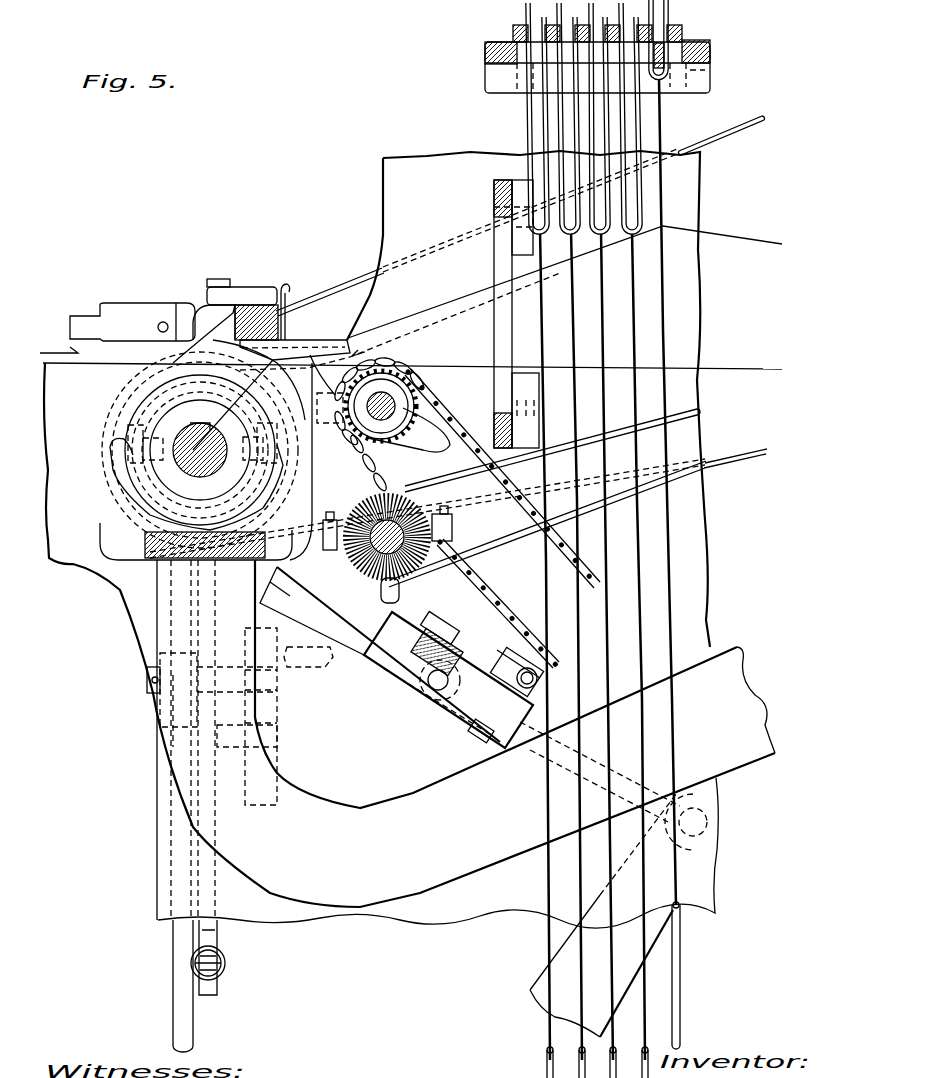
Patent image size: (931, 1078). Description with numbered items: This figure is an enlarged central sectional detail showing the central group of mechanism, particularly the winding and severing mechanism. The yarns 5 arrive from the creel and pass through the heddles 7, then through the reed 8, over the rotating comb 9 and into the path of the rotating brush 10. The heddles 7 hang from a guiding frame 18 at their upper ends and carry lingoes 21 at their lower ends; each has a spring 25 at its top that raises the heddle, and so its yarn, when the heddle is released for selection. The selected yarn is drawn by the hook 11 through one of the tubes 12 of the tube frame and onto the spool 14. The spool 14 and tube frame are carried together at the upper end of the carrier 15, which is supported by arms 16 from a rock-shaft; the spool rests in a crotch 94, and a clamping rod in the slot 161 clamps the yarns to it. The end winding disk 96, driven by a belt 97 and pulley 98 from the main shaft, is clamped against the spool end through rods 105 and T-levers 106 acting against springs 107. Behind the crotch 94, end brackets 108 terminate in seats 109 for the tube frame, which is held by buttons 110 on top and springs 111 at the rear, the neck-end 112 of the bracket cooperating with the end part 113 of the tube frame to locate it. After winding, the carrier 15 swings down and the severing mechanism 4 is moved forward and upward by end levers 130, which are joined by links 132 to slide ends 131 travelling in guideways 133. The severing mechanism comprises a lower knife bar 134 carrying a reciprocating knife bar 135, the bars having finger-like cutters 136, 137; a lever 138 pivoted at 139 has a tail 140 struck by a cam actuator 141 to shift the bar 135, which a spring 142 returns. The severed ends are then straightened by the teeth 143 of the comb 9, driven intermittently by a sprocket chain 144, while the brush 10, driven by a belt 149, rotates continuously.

The severing mechanism 4 is at (385, 700).
The yarns 5 is at (760, 352).
The heddles 7 is at (667, 325).
The reed 8 is at (493, 265).
The rotating comb 9 is at (410, 385).
The brush 10 is at (368, 577).
The hook 11 is at (56, 351).
The tubes 12 is at (295, 352).
The spool 14 is at (190, 445).
The carrier 15 is at (170, 560).
The arms 16 is at (412, 539).
The guiding frame 18 is at (700, 40).
The lingoes 21 is at (547, 1063).
The spring 25 is at (563, 125).
The crotch 94 is at (122, 470).
The end winding disk 96 is at (200, 385).
The belt 97 is at (372, 284).
The pulley 98 is at (318, 400).
The rods 105 is at (178, 1012).
The T-levers 106 is at (197, 627).
The springs 107 is at (225, 965).
The end brackets 108 is at (303, 510).
The seats 109 is at (230, 280).
The buttons 110 is at (267, 290).
The springs 111 is at (292, 285).
The neck-end 112 is at (217, 313).
The end part 113 is at (150, 310).
The end levers 130 is at (538, 992).
The slide ends 131 is at (470, 738).
The links 132 is at (540, 748).
The guideways 133 is at (292, 618).
The lower knife bar 134 is at (420, 697).
The reciprocating knife bar 135 is at (423, 637).
The cutters 136 is at (383, 640).
The cutters 137 is at (400, 617).
The lever 138 is at (470, 653).
The pivot 139 is at (528, 630).
The tail 140 is at (600, 717).
The cam actuator 141 is at (553, 677).
The spring 142 is at (563, 693).
The teeth 143 is at (440, 430).
The sprocket chain 144 is at (560, 555).
The belt 149 is at (705, 412).
The slot 161 is at (200, 425).